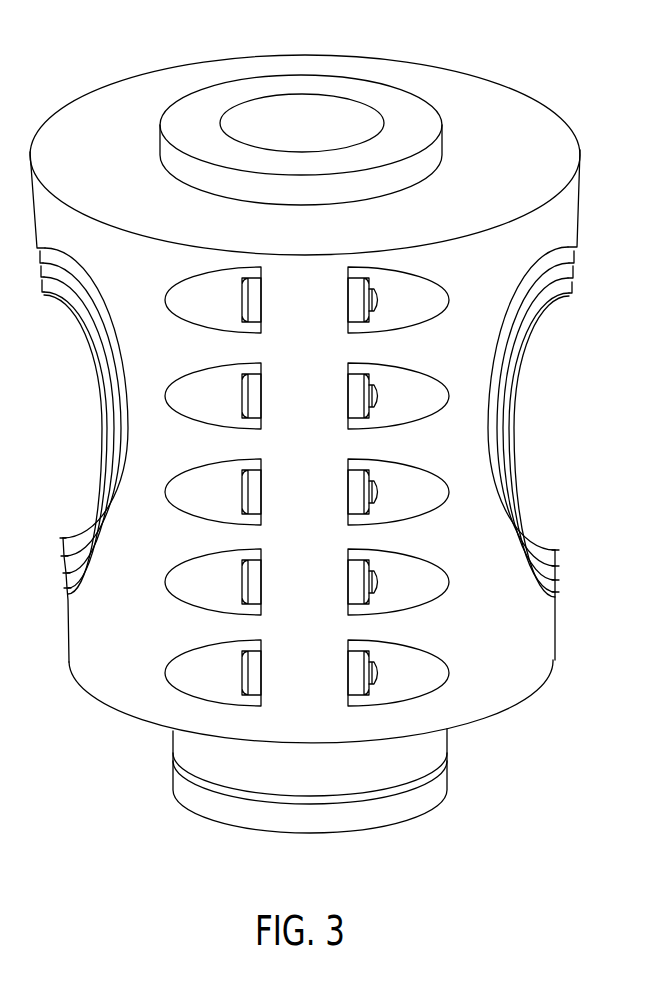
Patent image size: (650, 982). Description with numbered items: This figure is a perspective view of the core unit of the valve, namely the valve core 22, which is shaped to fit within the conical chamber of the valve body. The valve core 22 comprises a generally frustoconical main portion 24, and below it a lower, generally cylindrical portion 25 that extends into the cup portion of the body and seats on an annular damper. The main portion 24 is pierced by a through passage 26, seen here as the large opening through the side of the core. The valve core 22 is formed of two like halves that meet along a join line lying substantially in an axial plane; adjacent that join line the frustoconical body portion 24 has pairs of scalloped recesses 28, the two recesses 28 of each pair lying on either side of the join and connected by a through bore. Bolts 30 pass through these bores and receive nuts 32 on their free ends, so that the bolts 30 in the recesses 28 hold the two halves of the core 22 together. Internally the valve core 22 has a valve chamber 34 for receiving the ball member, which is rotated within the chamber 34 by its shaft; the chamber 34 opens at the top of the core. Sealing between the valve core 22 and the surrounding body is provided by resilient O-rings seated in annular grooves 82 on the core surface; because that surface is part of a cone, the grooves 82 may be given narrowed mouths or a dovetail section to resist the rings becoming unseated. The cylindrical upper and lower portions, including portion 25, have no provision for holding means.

The valve core 22 is at (118, 727).
The main portion 24 is at (93, 660).
The lower portion 25 is at (188, 797).
The through passage 26 is at (102, 433).
The scalloped recesses 28 is at (218, 317).
The bolts 30 is at (243, 295).
The nuts 32 is at (357, 280).
The valve chamber 34 is at (267, 121).
The grooves 82 is at (72, 562).